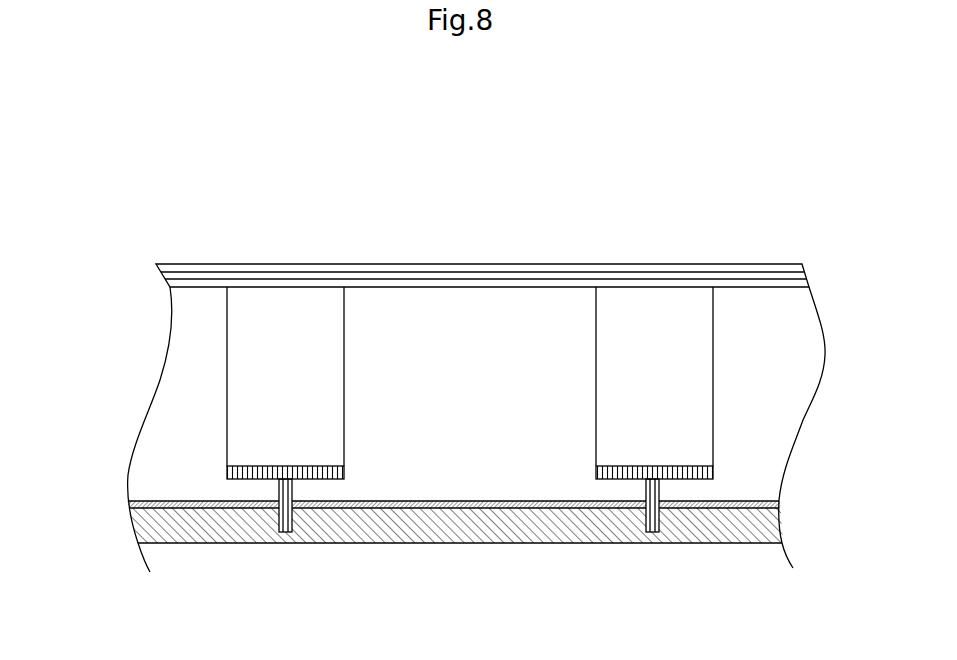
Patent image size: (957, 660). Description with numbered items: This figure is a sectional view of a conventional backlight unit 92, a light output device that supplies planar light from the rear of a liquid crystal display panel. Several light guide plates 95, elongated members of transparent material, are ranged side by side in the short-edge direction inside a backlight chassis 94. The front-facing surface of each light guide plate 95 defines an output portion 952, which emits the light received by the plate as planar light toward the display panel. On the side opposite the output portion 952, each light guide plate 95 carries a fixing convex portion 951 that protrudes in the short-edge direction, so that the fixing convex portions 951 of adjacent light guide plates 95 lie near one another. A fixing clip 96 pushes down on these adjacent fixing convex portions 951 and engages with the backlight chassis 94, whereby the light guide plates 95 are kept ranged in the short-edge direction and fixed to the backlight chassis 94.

The backlight unit 92 is at (160, 206).
The backlight chassis 94 is at (153, 527).
The light guide plate 95 is at (185, 372).
The fixing convex portion 951 is at (248, 492).
The output portion 952 is at (198, 287).
The fixing clip 96 is at (285, 466).